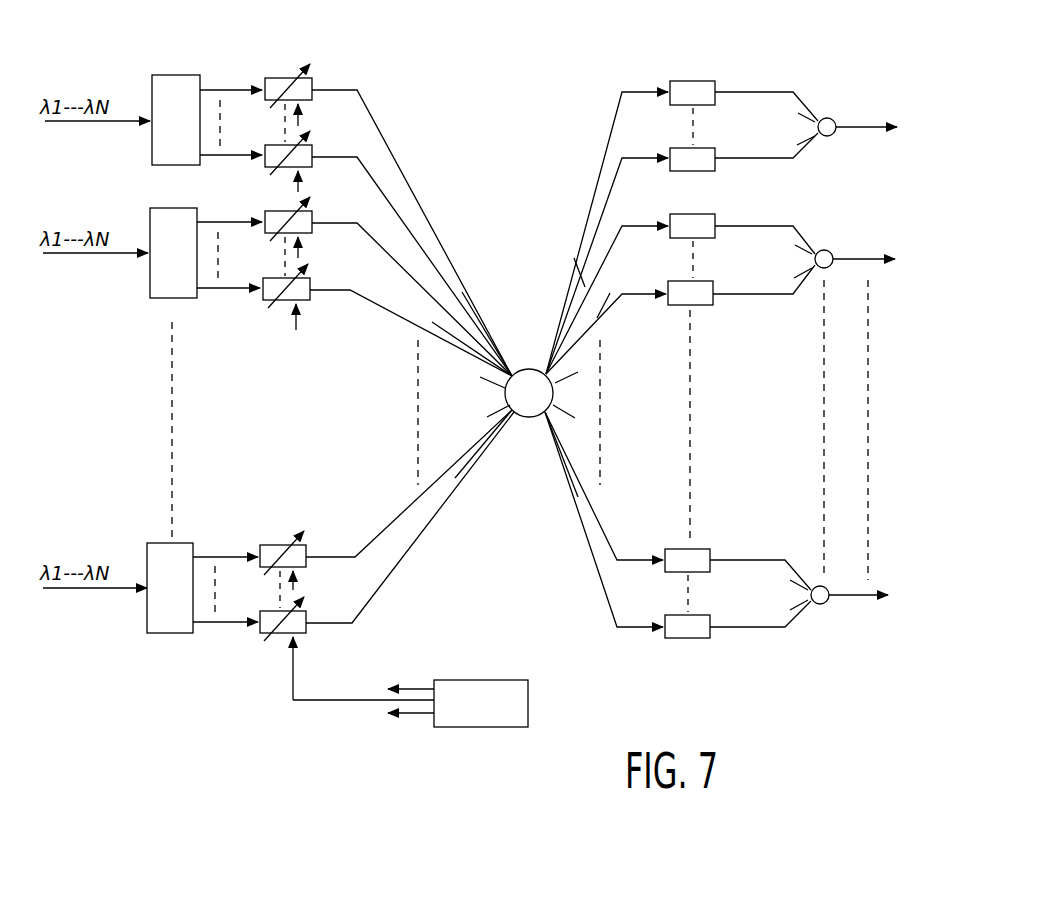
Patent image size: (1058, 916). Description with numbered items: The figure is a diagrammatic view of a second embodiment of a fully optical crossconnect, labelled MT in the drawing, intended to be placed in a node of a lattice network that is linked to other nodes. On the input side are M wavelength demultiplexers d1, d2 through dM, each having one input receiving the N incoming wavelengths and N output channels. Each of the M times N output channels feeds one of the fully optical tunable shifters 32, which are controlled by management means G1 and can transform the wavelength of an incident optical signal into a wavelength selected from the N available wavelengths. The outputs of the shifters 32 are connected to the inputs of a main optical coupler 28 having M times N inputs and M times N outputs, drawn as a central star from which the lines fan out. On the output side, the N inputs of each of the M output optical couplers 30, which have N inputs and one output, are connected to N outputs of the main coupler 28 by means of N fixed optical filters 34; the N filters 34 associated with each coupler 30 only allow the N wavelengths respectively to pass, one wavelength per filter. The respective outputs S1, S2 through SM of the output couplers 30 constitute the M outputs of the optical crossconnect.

The optical coupler 28 is at (525, 418).
The output optical coupler 30 is at (827, 118).
The fully optical tunable shifter 32 is at (312, 82).
The fixed optical filter 34 is at (710, 81).
The demultiplexer d1 is at (170, 75).
The demultiplexer d2 is at (190, 298).
The demultiplexer dM is at (170, 633).
The management means G1 is at (518, 680).
The output S1 is at (866, 133).
The output S2 is at (855, 258).
The output SM is at (858, 598).
The transmission system MT is at (455, 62).